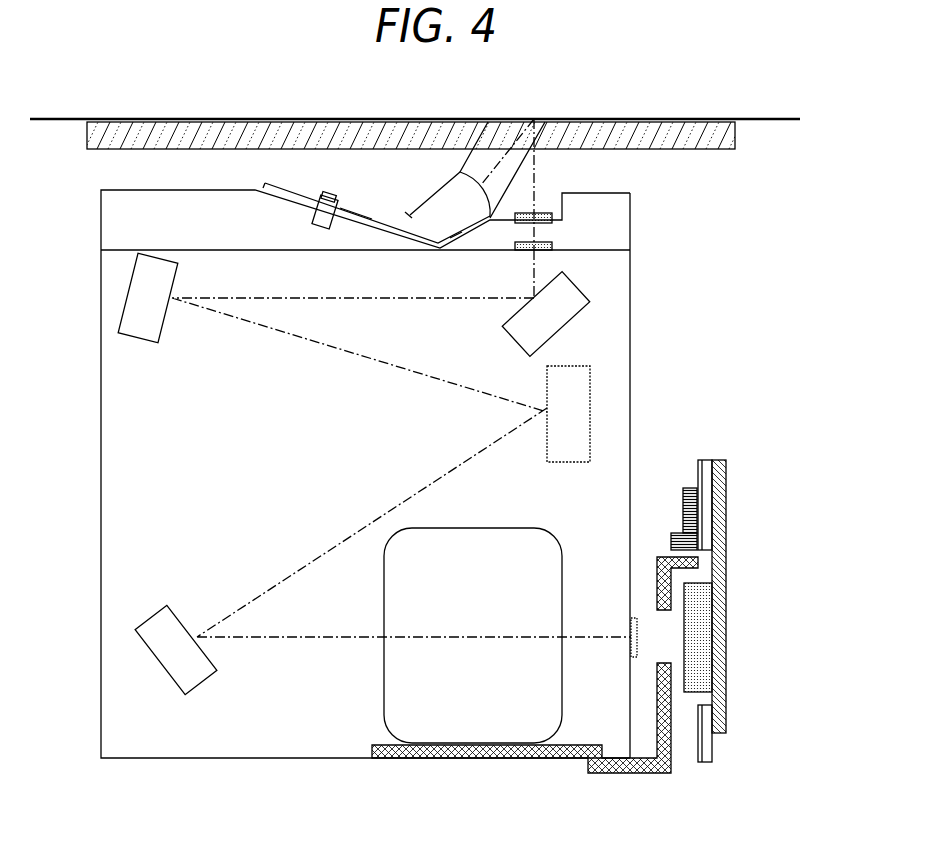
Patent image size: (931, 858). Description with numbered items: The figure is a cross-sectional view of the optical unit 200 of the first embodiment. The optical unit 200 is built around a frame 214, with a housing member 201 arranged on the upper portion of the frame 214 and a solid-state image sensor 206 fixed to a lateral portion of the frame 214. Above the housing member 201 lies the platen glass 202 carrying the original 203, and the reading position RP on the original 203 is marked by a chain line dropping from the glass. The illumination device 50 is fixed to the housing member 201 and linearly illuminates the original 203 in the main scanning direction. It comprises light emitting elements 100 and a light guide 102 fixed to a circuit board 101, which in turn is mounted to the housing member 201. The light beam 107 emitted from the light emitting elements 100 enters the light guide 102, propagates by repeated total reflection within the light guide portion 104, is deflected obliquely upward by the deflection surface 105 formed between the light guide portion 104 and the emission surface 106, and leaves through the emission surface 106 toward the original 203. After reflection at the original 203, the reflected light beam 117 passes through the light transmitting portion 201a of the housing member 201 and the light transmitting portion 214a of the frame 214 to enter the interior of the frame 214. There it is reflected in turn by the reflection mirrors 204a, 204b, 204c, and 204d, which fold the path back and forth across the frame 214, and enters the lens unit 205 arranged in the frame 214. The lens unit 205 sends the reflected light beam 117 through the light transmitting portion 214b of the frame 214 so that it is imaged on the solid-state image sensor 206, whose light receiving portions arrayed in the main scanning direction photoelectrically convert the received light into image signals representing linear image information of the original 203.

The illumination device 50 is at (397, 166).
The light emitting elements 100 is at (312, 203).
The circuit board 101 is at (264, 184).
The light guide 102 is at (407, 206).
The light guide portion 104 is at (357, 200).
The deflection surface 105 is at (450, 237).
The emission surface 106 is at (458, 172).
The light beam 107 is at (493, 174).
The reflected light beam 117 is at (533, 268).
The reading position RP is at (535, 116).
The optical unit 200 is at (153, 760).
The housing member 201 is at (607, 191).
The light transmitting portion 201a is at (540, 212).
The platen glass 202 is at (298, 122).
The original 203 is at (575, 118).
The reflection mirror 204a is at (562, 297).
The reflection mirror 204b is at (140, 303).
The reflection mirror 204c is at (578, 410).
The reflection mirror 204d is at (198, 675).
The lens unit 205 is at (478, 727).
The solid-state image sensor 206 is at (703, 637).
The frame 214 is at (632, 326).
The light transmitting portion 214a is at (552, 242).
The light transmitting portion 214b is at (634, 617).